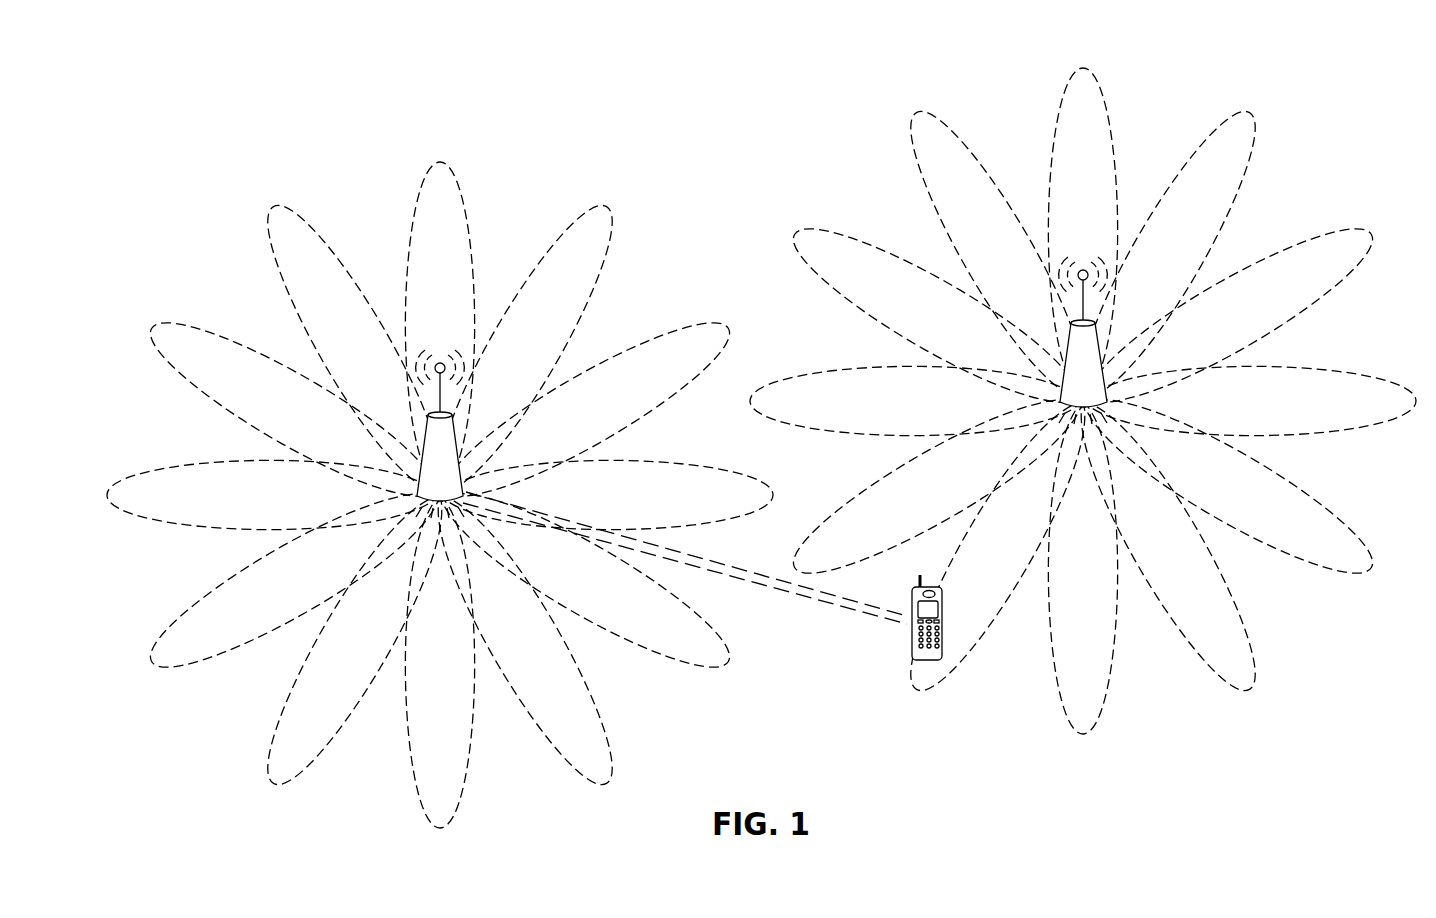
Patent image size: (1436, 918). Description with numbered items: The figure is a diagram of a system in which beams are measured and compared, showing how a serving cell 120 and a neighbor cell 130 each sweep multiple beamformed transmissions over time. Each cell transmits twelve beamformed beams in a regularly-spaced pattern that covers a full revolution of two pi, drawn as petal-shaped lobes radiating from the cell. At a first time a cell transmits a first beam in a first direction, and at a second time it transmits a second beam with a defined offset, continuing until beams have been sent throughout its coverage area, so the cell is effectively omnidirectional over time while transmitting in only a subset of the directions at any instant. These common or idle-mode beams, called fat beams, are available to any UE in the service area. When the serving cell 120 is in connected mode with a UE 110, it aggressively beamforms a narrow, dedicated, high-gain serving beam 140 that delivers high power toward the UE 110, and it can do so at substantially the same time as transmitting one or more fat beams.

The UE 110 is at (911, 638).
The serving cell 120 is at (440, 481).
The neighbor cell 130 is at (1083, 386).
The serving beam 140 is at (799, 599).